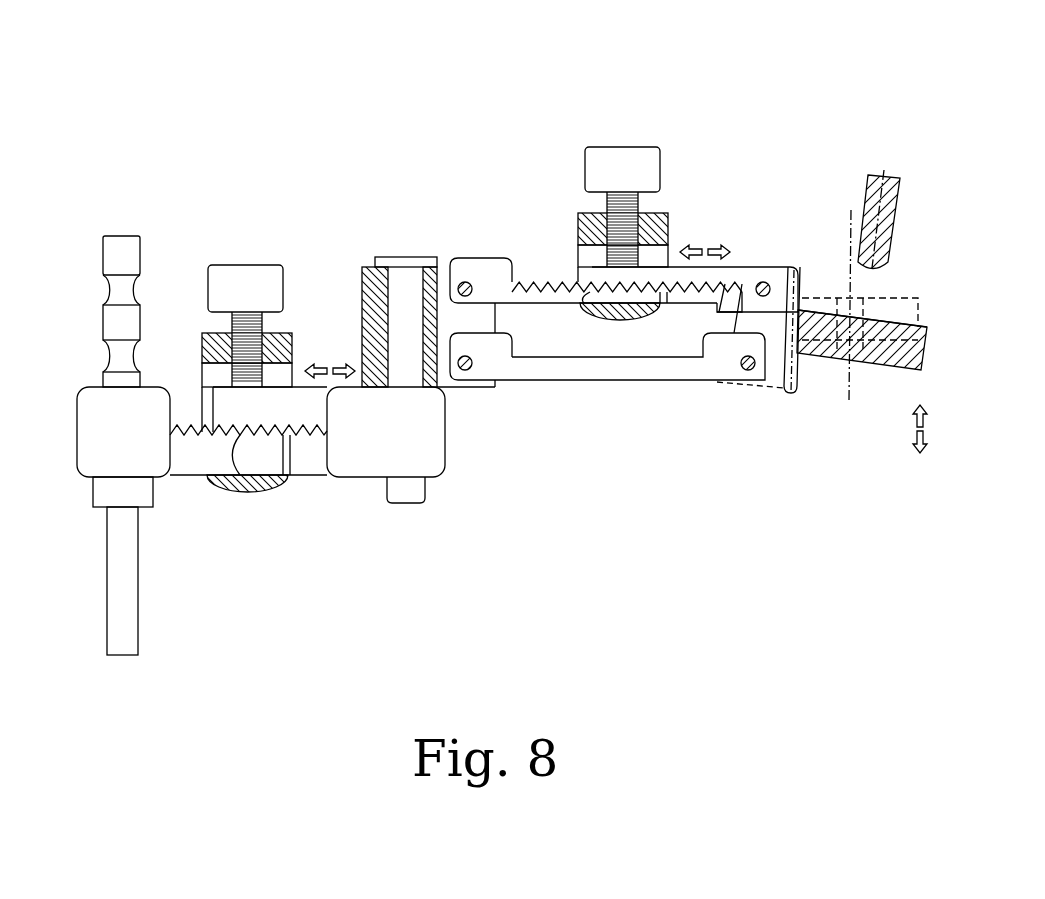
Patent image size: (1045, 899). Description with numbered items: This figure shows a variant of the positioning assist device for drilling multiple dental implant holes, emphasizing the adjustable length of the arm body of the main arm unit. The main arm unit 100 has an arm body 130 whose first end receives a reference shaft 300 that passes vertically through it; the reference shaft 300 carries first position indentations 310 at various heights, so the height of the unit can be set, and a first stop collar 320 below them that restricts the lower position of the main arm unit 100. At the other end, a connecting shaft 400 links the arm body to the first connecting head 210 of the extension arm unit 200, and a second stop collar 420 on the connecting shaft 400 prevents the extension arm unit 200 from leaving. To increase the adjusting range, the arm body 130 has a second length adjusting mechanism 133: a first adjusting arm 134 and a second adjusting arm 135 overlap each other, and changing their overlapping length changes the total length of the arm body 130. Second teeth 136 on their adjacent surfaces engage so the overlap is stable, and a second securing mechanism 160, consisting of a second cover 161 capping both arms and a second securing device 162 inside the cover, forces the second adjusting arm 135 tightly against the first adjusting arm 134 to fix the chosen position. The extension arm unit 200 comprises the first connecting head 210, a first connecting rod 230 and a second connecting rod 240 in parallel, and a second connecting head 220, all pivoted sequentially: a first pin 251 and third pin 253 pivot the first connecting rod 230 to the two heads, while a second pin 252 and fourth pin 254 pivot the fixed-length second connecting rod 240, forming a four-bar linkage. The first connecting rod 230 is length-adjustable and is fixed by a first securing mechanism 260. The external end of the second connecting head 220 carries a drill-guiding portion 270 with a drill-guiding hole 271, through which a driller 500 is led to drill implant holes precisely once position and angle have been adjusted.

The main arm unit 100 is at (256, 398).
The arm body 130 is at (273, 500).
The second length adjusting mechanism 133 is at (303, 455).
The first adjusting arm 134 is at (188, 460).
The second adjusting arm 135 is at (300, 393).
The second teeth 136 is at (242, 492).
The second securing mechanism 160 is at (222, 258).
The second cover 161 is at (200, 348).
The second securing device 162 is at (247, 277).
The extension arm unit 200 is at (619, 259).
The first connecting head 210 is at (367, 293).
The second connecting head 220 is at (808, 267).
The first connecting rod 230 is at (548, 270).
The second connecting rod 240 is at (653, 383).
The first pin 251 is at (460, 279).
The second pin 252 is at (470, 369).
The third pin 253 is at (760, 283).
The fourth pin 254 is at (752, 369).
The first securing mechanism 260 is at (637, 140).
The drill-guiding portion 270 is at (917, 248).
The drill-guiding hole 271 is at (872, 275).
The reference shaft 300 is at (103, 615).
The first position indentations 310 is at (110, 292).
The first stop collar 320 is at (97, 490).
The connecting shaft 400 is at (443, 493).
The second stop collar 420 is at (385, 255).
The driller 500 is at (900, 192).